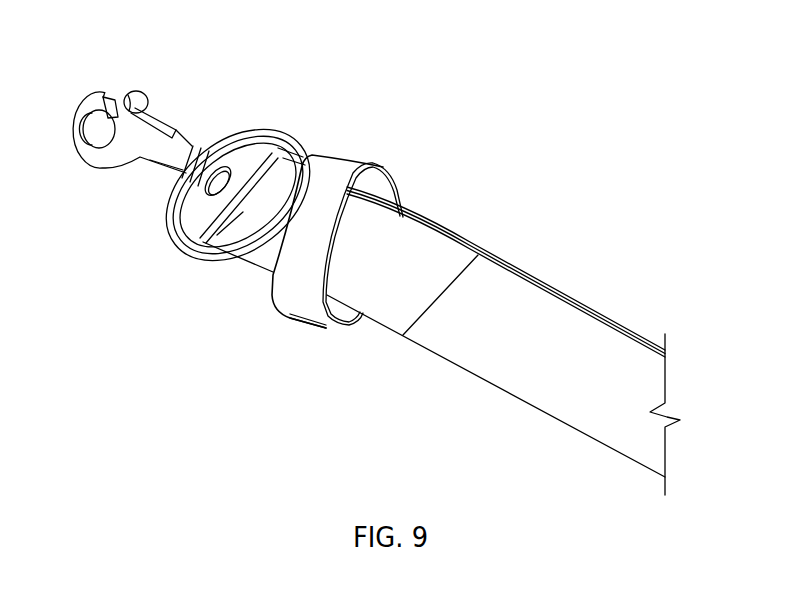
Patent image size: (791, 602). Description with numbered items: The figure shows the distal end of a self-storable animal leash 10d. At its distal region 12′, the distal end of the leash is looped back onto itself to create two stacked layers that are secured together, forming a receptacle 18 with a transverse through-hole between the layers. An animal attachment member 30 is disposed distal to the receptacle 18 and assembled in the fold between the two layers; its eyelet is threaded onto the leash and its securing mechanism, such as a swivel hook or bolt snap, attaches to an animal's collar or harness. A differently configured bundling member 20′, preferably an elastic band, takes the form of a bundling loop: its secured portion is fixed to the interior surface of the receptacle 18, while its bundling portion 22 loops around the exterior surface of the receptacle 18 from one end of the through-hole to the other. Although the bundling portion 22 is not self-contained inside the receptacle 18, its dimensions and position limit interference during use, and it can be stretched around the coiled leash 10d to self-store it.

The self-storable leash 10d is at (613, 98).
The animal attachment member 30 is at (90, 201).
The distal region 12′ is at (229, 354).
The receptacle 18 is at (440, 228).
The bundling member 20′ is at (370, 136).
The bundling portion 22 is at (295, 318).